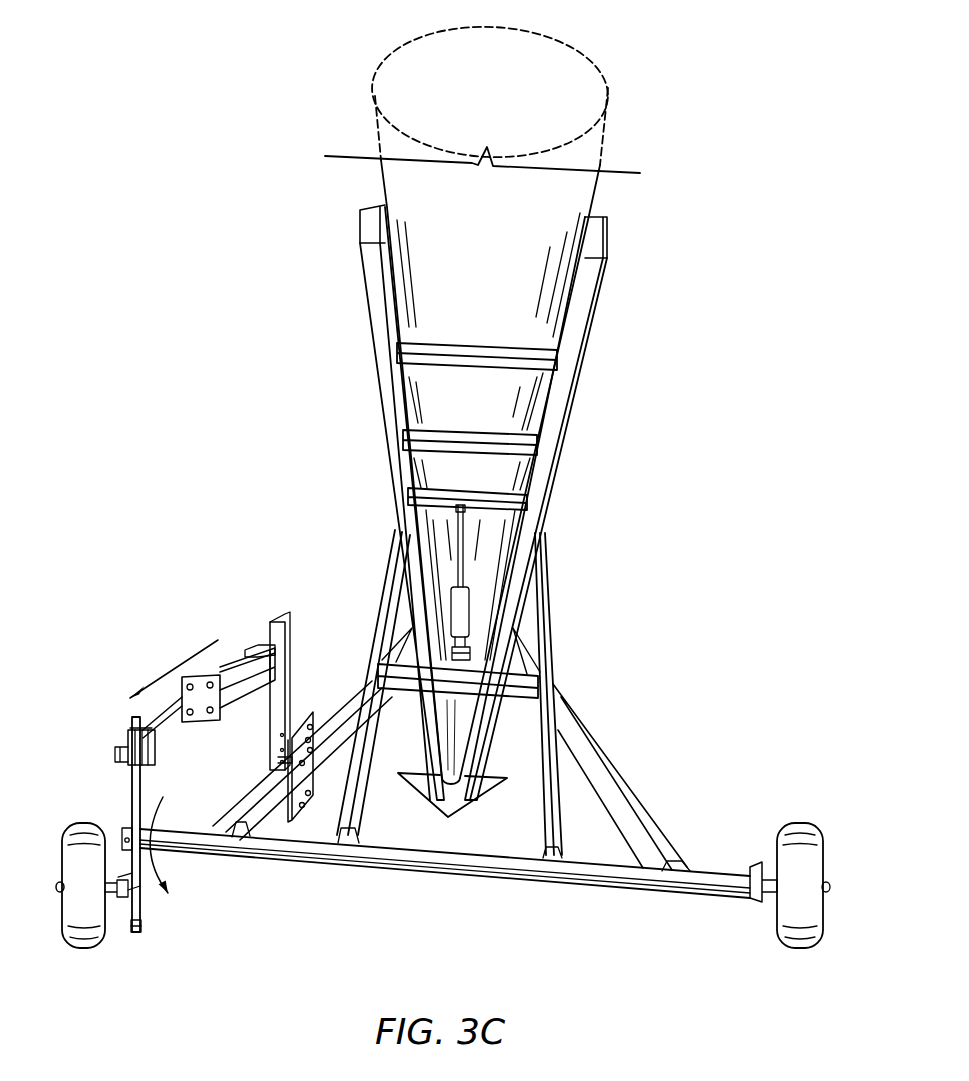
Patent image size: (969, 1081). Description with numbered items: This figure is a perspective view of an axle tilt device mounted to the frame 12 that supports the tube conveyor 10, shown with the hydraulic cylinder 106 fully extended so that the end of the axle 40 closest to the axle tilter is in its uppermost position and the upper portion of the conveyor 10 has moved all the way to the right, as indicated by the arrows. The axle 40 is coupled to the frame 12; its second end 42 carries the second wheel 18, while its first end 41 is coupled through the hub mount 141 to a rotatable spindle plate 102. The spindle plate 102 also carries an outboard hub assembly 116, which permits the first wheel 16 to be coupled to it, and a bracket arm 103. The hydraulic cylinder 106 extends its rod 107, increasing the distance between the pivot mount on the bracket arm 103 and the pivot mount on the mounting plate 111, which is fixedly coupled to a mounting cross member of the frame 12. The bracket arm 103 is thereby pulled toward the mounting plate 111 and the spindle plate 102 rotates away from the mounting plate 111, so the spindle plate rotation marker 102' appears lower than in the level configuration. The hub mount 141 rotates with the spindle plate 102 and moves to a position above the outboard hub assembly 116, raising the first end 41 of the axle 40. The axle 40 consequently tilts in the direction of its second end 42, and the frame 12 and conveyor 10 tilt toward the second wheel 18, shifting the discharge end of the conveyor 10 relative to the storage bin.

The conveyor 10 is at (598, 88).
The frame 12 is at (592, 383).
The first wheel 16 is at (72, 905).
The second wheel 18 is at (813, 923).
The axle 40 is at (455, 866).
The first end of the axle 41 is at (167, 905).
The second end of the axle 42 is at (758, 878).
The spindle plate 102 is at (98, 812).
The spindle plate rotation marker 102' is at (171, 954).
The bracket arm 103 is at (148, 752).
The hydraulic cylinder 106 is at (242, 683).
The rod 107 is at (167, 723).
The mounting plate 111 is at (285, 698).
The outboard hub assembly 116 is at (58, 887).
The hub mount 141 is at (122, 840).